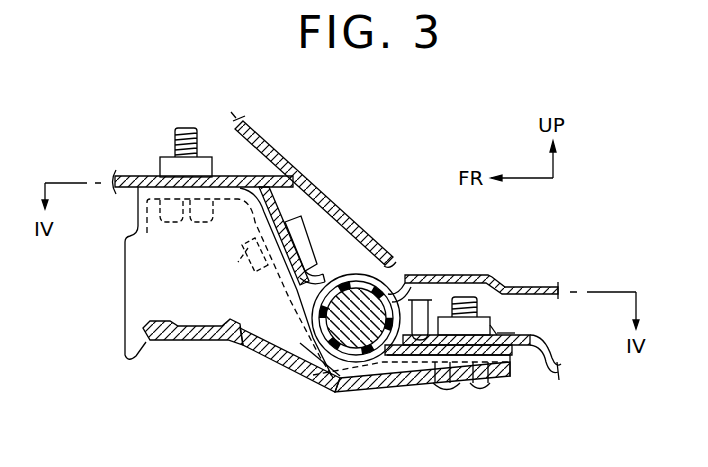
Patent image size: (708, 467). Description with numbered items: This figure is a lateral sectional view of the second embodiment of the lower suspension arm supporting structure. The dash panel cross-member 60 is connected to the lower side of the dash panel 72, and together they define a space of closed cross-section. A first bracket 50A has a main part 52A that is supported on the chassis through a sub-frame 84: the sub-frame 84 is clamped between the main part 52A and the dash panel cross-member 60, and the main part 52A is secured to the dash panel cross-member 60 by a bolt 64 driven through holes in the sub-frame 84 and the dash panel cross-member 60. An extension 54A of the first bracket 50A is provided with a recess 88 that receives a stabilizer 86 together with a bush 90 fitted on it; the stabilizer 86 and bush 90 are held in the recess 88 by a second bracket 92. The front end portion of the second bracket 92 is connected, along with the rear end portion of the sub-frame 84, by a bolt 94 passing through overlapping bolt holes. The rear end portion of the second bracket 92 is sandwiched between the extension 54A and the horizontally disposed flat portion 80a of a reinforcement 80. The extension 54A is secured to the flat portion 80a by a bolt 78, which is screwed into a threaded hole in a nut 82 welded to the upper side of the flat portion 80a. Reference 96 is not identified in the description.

The first bracket 50A is at (245, 367).
The main part 52A is at (195, 341).
The extension 54A is at (423, 386).
The dash panel cross-member 60 is at (125, 175).
The bolt 64 is at (188, 128).
The dash panel 72 is at (275, 160).
The bolt 78 is at (481, 393).
The reinforcement 80 is at (511, 337).
The flat portion 80a is at (505, 332).
The nut 82 is at (497, 327).
The sub-frame 84 is at (128, 194).
The stabilizer 86 is at (355, 348).
The recess 88 is at (387, 372).
The bush 90 is at (396, 278).
The second bracket 92 is at (437, 278).
The bolt 94 is at (306, 238).
The nut 96 is at (247, 255).